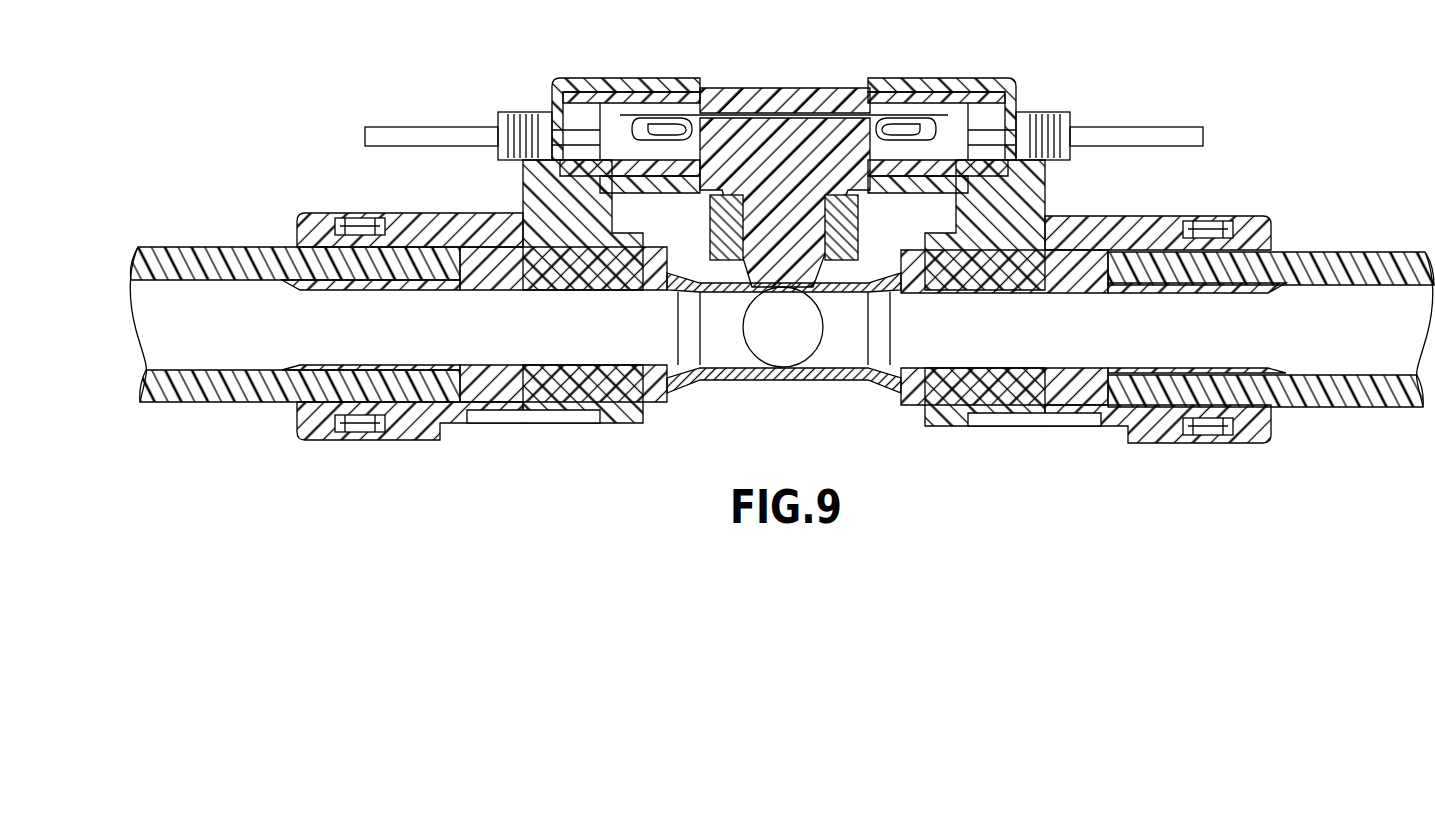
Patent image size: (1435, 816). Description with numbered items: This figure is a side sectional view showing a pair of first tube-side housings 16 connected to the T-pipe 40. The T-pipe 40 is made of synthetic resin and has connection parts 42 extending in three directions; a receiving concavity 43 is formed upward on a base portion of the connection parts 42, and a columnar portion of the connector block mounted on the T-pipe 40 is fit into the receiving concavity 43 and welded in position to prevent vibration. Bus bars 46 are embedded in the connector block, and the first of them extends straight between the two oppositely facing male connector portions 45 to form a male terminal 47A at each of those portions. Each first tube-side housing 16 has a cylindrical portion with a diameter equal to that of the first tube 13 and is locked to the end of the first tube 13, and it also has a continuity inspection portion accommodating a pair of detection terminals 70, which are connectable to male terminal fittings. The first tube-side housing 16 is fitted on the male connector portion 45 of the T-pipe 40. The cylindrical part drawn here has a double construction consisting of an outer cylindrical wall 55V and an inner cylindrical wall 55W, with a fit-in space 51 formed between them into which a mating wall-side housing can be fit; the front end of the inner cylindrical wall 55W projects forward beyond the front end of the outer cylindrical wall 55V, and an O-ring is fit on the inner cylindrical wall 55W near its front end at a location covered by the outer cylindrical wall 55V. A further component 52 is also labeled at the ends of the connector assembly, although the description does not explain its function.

The first tube 13 is at (226, 410).
The first tube-side housing 16 is at (300, 206).
The T-pipe 40 is at (722, 382).
The connection part 42 is at (605, 420).
The receiving concavity 43 is at (861, 215).
The male connector portion 45 is at (608, 92).
The bus bar 46 is at (781, 113).
The male terminal 47A is at (673, 117).
The fit-in space 51 is at (454, 422).
The cap 52 is at (567, 78).
The outer cylindrical wall 55V is at (564, 414).
The inner cylindrical wall 55W is at (562, 376).
The detection terminal 70 is at (695, 78).